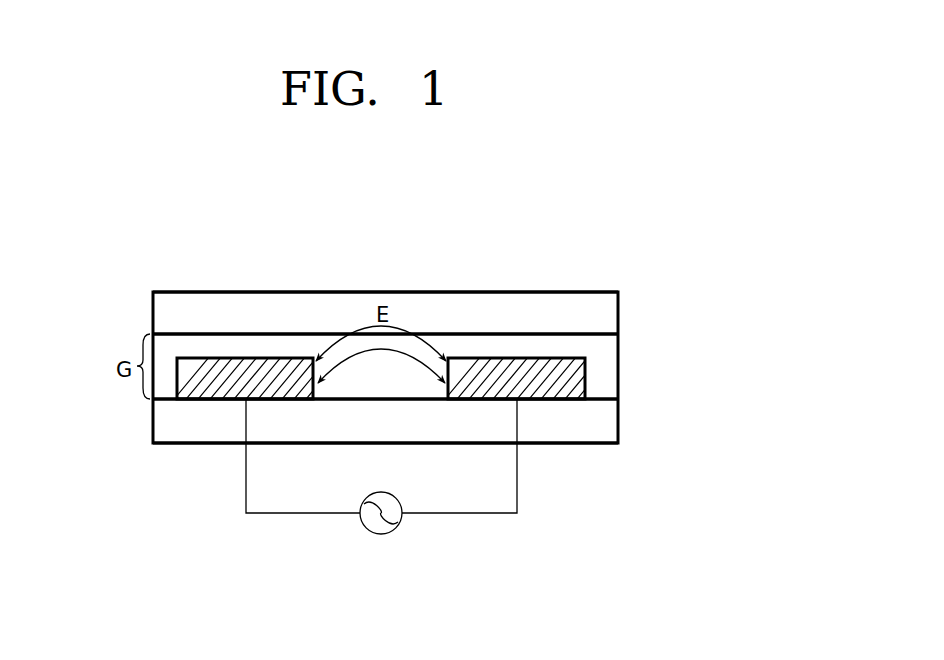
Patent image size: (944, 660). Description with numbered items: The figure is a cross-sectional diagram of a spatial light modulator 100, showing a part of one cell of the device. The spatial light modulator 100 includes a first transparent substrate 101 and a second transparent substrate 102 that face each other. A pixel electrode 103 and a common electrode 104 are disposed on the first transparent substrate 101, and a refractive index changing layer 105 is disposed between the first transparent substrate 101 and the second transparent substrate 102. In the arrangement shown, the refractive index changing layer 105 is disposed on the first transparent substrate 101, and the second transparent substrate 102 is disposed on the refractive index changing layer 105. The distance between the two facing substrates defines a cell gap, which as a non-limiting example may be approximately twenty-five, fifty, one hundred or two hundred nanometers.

The spatial light modulator 100 is at (135, 467).
The first transparent substrate 101 is at (165, 428).
The second transparent substrate 102 is at (233, 308).
The pixel electrode 103 is at (205, 374).
The common electrode 104 is at (547, 390).
The refractive index changing layer 105 is at (602, 368).